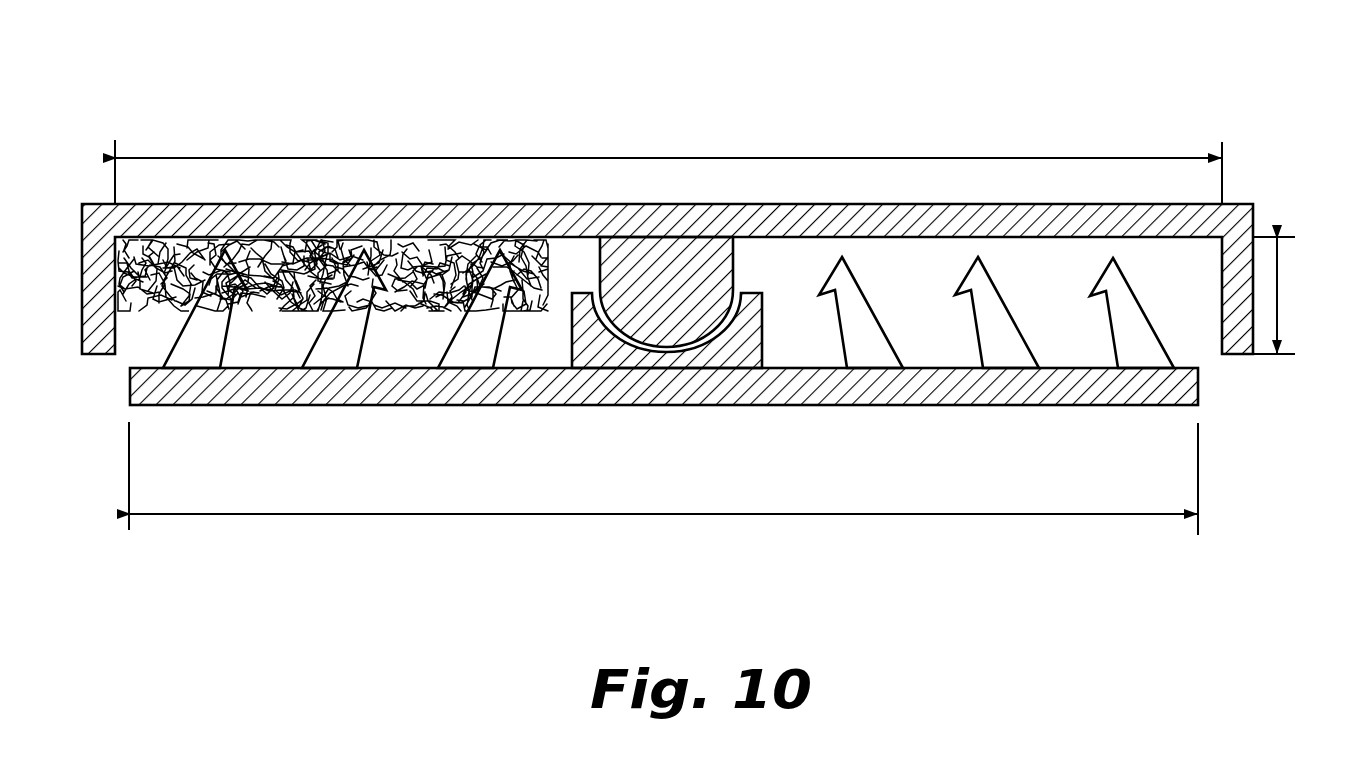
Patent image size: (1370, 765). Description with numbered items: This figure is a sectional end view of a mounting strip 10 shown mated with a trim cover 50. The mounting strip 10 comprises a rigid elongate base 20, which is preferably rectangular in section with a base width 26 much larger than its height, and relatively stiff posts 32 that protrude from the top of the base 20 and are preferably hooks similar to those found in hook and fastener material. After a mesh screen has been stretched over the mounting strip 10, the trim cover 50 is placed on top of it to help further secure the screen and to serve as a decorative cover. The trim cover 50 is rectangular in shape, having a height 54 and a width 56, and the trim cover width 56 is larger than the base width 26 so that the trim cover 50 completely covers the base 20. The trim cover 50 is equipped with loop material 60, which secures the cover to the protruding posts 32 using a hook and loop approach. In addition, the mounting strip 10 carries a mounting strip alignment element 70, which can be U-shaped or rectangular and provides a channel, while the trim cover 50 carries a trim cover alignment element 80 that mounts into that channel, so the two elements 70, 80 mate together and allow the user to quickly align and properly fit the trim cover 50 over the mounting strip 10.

The mounting strip 10 is at (902, 537).
The elongate base 20 is at (733, 396).
The base width 26 is at (510, 515).
The posts 32 is at (1150, 348).
The trim cover 50 is at (1075, 218).
The trim cover height 54 is at (1278, 300).
The trim cover width 56 is at (393, 157).
The loop material 60 is at (437, 242).
The mounting strip alignment element 70 is at (645, 320).
The trim cover alignment element 80 is at (593, 396).